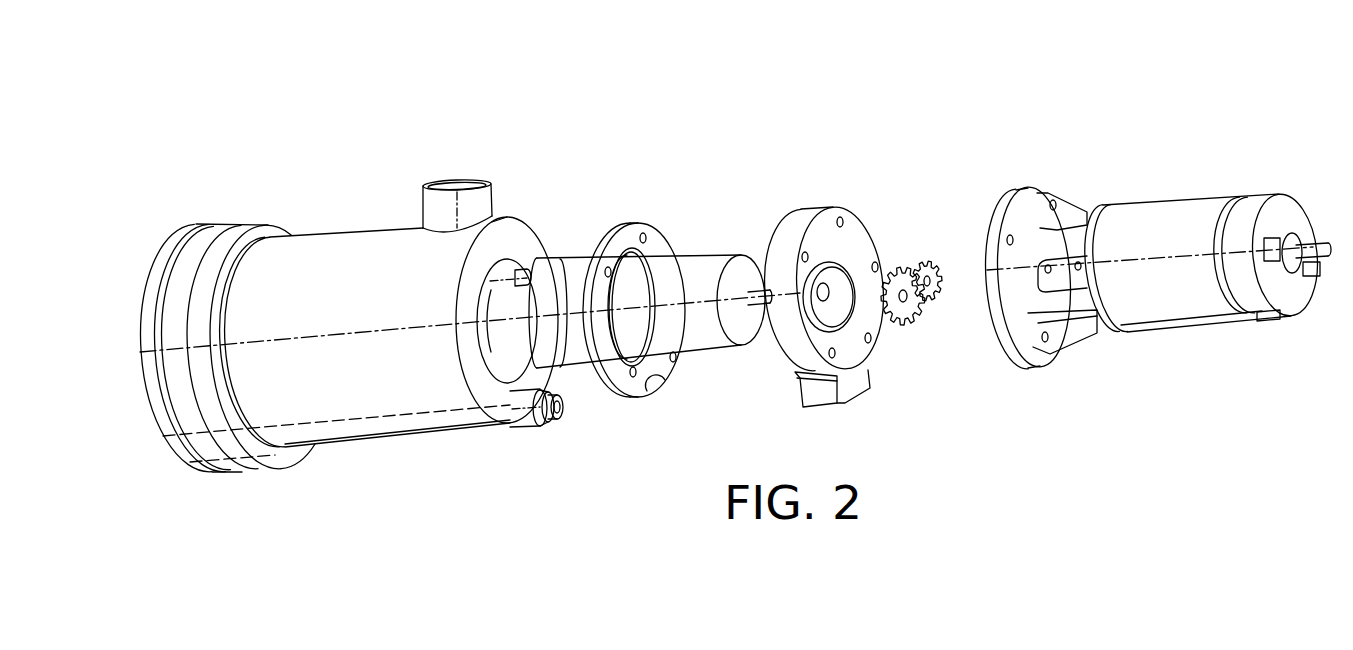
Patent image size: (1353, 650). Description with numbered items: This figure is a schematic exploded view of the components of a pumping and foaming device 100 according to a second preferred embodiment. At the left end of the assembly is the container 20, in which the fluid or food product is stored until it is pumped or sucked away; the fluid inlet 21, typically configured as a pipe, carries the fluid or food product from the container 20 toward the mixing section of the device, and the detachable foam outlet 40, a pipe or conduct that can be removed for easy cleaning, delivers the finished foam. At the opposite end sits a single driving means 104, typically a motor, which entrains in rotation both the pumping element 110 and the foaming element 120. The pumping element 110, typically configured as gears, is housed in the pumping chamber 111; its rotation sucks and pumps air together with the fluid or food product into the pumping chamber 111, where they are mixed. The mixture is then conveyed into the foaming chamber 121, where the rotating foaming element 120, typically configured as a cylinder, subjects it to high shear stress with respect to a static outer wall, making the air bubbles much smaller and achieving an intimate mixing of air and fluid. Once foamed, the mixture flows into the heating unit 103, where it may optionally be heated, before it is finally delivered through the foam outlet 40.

The pumping and foaming device 100 is at (488, 98).
The container 20 is at (363, 238).
The fluid inlet 21 is at (527, 428).
The foam outlet 40 is at (197, 473).
The heating unit 103 is at (198, 238).
The driving means 104 is at (1177, 323).
The pumping element 110 is at (907, 323).
The pumping chamber 111 is at (837, 265).
The foaming element 120 is at (700, 340).
The foaming chamber 121 is at (637, 270).